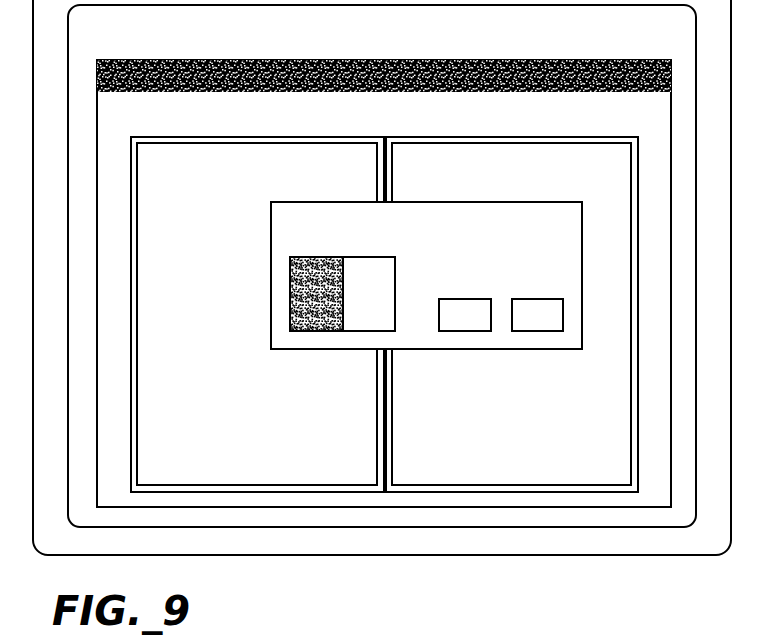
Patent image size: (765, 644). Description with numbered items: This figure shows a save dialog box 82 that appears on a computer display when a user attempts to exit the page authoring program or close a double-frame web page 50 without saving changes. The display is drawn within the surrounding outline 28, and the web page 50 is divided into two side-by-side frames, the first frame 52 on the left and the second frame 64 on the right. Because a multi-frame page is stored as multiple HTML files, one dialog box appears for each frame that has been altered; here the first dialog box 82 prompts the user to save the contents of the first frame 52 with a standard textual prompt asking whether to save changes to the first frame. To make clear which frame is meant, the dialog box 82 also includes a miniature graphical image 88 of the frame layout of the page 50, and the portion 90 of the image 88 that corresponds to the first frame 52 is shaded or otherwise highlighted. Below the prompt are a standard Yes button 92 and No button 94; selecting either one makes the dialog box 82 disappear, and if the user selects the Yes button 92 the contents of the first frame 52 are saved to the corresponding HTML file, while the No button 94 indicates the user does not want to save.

The handheld device housing 28 is at (447, 555).
The web page 50 is at (482, 128).
The first frame 52 is at (267, 439).
The right frame panel 64 is at (527, 439).
The save dialog box 82 is at (488, 202).
The miniature graphical image 88 is at (362, 243).
The portion of the image 90 is at (310, 257).
The Yes button 92 is at (457, 331).
The No button 94 is at (536, 331).